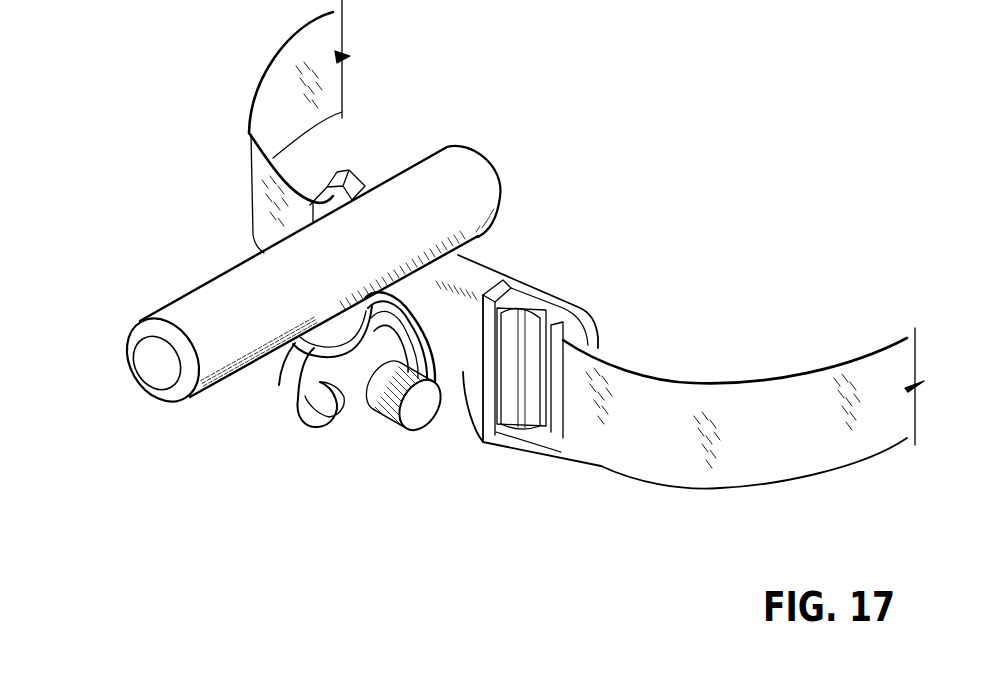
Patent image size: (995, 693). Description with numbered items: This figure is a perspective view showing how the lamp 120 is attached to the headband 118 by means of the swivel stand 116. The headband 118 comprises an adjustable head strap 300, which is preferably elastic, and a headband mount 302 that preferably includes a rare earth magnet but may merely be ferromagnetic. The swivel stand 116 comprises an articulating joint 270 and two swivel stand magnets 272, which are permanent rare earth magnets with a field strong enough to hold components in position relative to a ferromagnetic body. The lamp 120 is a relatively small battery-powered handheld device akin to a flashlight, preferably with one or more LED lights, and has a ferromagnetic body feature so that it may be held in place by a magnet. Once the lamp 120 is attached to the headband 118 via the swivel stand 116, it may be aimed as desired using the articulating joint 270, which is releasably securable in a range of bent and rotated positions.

The swivel stand 116 is at (357, 387).
The headband 118 is at (618, 486).
The lamp 120 is at (214, 303).
The articulating joint 270 is at (296, 405).
The swivel stand magnets 272 is at (396, 329).
The adjustable head strap 300 is at (800, 447).
The headband mount 302 is at (458, 352).